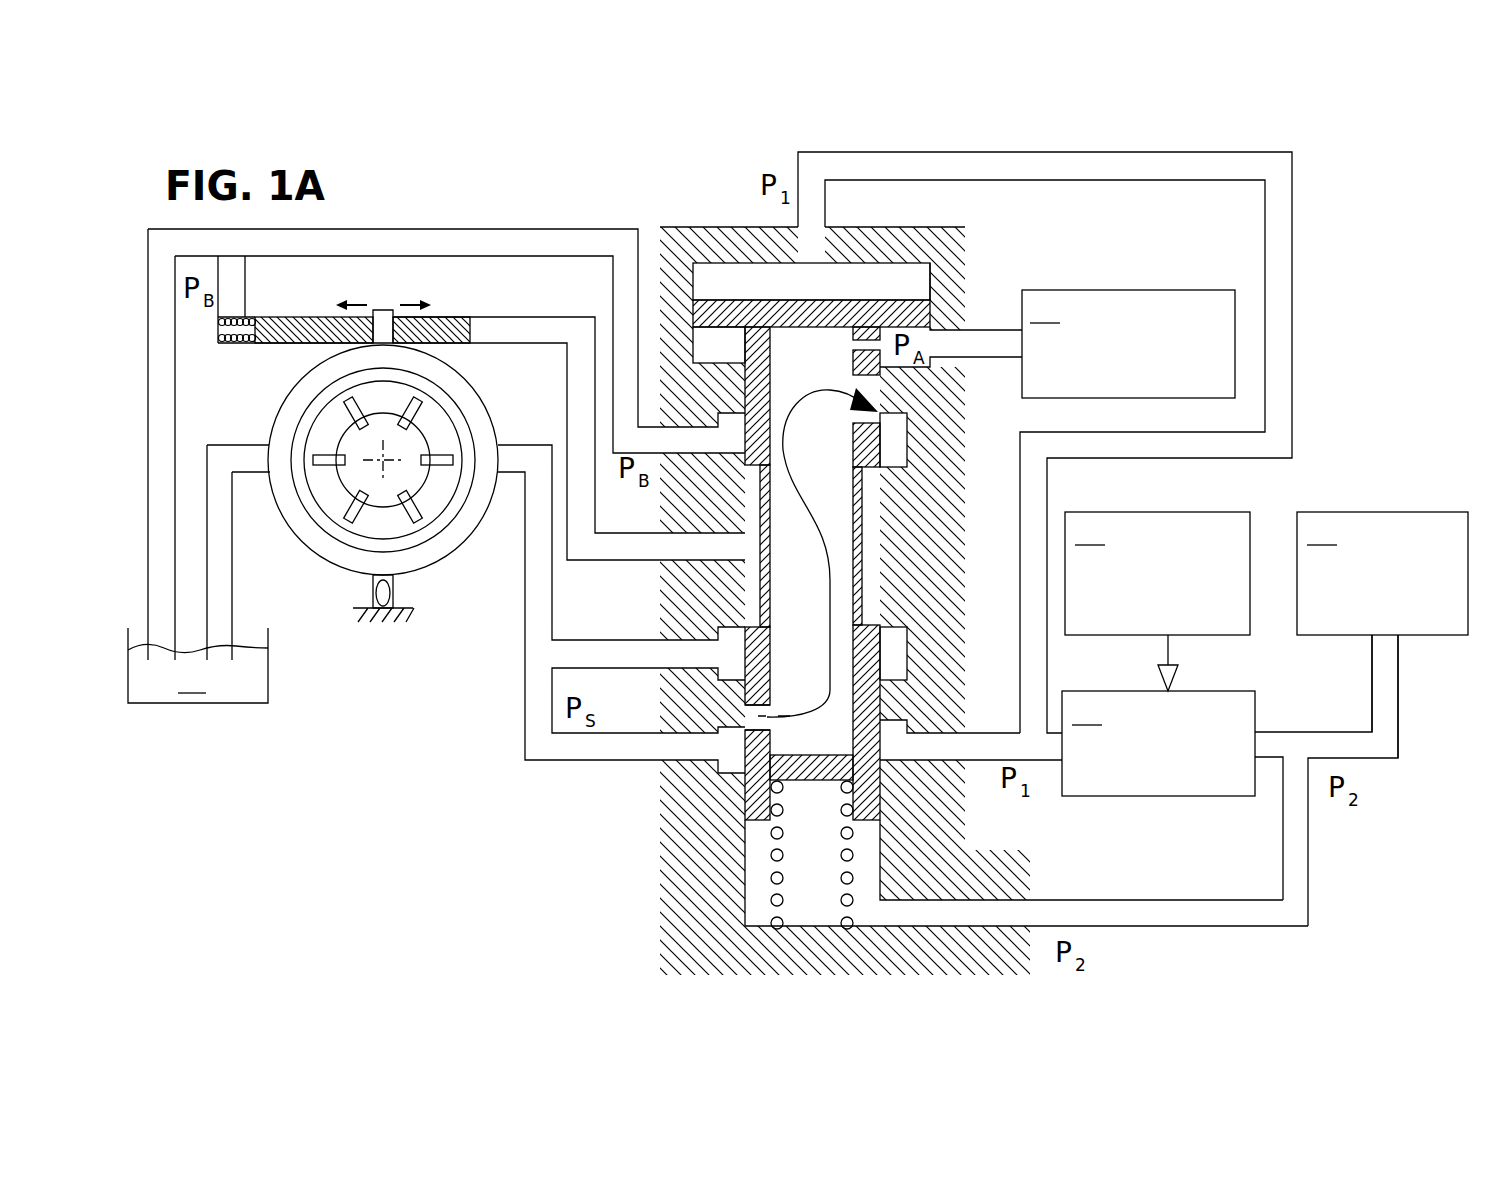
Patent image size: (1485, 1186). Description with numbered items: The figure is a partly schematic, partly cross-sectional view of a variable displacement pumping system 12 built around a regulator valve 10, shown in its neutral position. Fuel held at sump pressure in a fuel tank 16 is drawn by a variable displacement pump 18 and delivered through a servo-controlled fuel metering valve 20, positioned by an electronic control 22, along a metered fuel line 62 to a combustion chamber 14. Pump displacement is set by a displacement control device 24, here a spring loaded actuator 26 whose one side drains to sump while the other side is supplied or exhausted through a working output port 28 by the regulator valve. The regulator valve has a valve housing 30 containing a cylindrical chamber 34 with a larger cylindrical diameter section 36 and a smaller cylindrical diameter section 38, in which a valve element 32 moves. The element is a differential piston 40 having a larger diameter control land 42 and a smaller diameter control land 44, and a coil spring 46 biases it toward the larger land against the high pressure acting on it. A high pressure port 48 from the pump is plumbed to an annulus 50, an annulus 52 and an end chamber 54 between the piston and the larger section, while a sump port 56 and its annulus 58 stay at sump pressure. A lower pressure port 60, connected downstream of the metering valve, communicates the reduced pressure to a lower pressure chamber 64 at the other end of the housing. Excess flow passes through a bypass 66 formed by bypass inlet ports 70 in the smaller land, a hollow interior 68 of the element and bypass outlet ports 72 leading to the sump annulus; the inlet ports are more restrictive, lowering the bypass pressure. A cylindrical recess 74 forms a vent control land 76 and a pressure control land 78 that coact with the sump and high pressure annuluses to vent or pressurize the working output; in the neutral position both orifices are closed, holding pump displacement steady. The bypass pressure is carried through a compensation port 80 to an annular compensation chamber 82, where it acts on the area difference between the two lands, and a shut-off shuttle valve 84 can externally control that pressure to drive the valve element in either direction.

The regulator valve 10 is at (635, 962).
The variable displacement pumping system 12 is at (258, 930).
The combustion chamber 14 is at (1382, 573).
The fuel tank 16 is at (198, 466).
The variable displacement pump 18 is at (330, 547).
The fuel metering valve 20 is at (1158, 743).
The electronic control 22 is at (1157, 601).
The displacement control device 24 is at (408, 275).
The spring loaded actuator 26 is at (320, 332).
The working output port 28 is at (642, 550).
The valve housing 30 is at (713, 240).
The valve element 32 is at (740, 806).
The cylindrical chamber 34 is at (932, 274).
The larger cylindrical diameter section 36 is at (932, 292).
The smaller cylindrical diameter section 38 is at (745, 912).
The differential piston 40 is at (748, 300).
The larger diameter control land 42 is at (903, 300).
The smaller diameter control land 44 is at (867, 805).
The coil spring 46 is at (785, 877).
The high pressure port 48 is at (538, 575).
The annulus 50 is at (740, 665).
The annulus 52 is at (740, 760).
The end chamber 54 is at (853, 286).
The sump port 56 is at (625, 405).
The annulus 58 is at (893, 420).
The lower pressure port 60 is at (1020, 913).
The metered fuel line 62 is at (1398, 692).
The lower pressure chamber 64 is at (812, 867).
The bypass 66 is at (855, 565).
The hollow interior 68 is at (862, 655).
The bypass inlet port 70 is at (755, 714).
The bypass outlet port 72 is at (858, 418).
The cylindrical recess 74 is at (862, 506).
The vent control land 76 is at (757, 478).
The pressure control land 78 is at (748, 618).
The compensation port 80 is at (853, 346).
The annular compensation chamber 82 is at (720, 350).
The shut-off shuttle valve 84 is at (1128, 344).